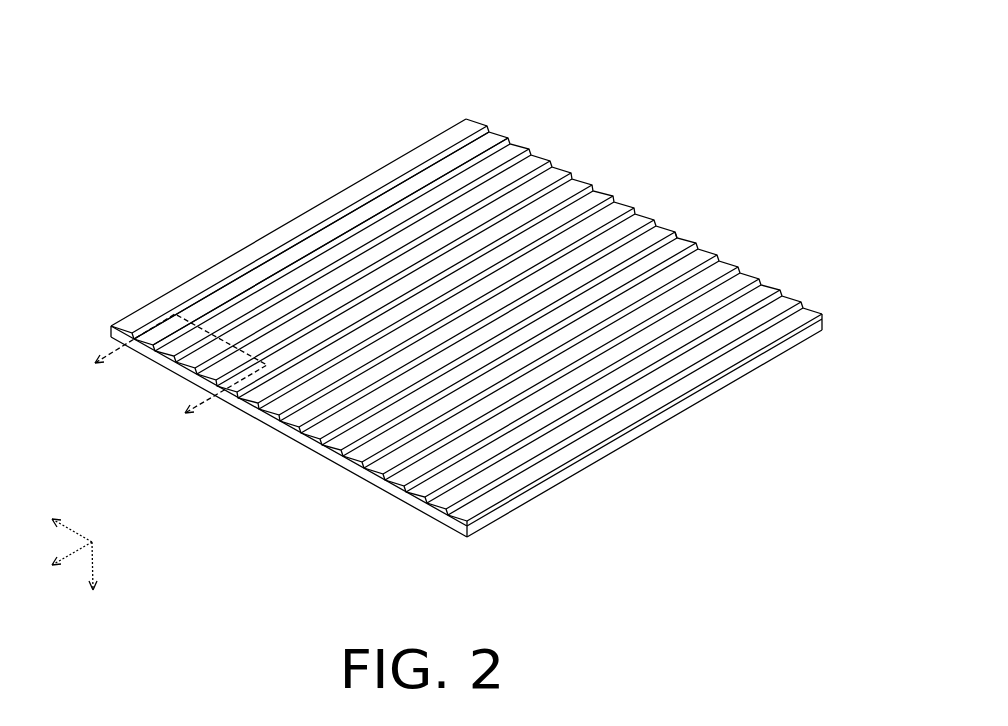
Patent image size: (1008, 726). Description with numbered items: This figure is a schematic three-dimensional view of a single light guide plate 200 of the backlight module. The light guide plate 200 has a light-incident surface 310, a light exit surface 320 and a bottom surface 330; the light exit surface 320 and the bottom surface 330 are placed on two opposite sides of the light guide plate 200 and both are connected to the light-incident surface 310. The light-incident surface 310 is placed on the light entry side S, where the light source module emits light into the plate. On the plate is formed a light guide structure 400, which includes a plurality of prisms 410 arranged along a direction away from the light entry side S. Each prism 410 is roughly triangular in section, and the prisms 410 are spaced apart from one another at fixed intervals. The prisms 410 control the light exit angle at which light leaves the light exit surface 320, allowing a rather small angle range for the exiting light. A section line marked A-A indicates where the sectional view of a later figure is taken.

The light guide plate 200 is at (95, 26).
The light-incident surface 310 is at (796, 348).
The light exit surface 320 is at (359, 480).
The bottom surface 330 is at (329, 198).
The light guide structure 400 is at (466, 306).
The prism 410 is at (477, 119).
The light entry side S is at (690, 432).